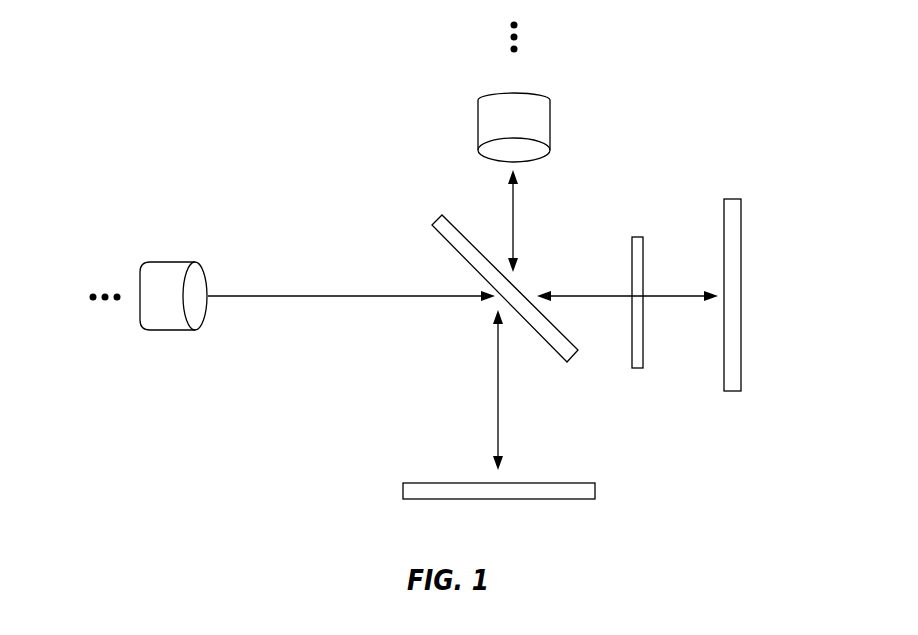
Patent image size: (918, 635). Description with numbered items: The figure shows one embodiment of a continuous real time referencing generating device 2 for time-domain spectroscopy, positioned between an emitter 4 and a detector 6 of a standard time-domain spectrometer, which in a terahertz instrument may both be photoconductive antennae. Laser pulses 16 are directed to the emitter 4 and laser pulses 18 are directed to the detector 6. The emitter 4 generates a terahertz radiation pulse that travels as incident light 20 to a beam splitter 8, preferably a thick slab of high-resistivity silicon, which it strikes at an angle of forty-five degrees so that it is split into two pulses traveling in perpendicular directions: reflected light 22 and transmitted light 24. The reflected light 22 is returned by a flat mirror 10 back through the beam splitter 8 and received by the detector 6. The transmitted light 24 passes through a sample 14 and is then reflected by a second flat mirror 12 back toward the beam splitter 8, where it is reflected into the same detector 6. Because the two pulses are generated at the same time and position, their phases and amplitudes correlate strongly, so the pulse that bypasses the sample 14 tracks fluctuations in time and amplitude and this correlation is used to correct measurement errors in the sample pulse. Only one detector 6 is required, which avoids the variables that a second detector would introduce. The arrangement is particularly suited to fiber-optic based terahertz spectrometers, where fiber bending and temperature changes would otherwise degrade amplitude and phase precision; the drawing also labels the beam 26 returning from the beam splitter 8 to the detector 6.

The continuous real time referencing generating device 2 is at (300, 422).
The emitter 4 is at (183, 262).
The detector 6 is at (550, 127).
The beam splitter 8 is at (432, 224).
The flat mirror 10 is at (572, 483).
The flat mirror 12 is at (733, 199).
The sample 14 is at (640, 237).
The laser pulses 16 is at (113, 293).
The laser pulses 18 is at (516, 37).
The incident light 20 is at (297, 296).
The reflected light 22 is at (498, 430).
The transmitted light 24 is at (557, 296).
The beam to detector 26 is at (514, 205).